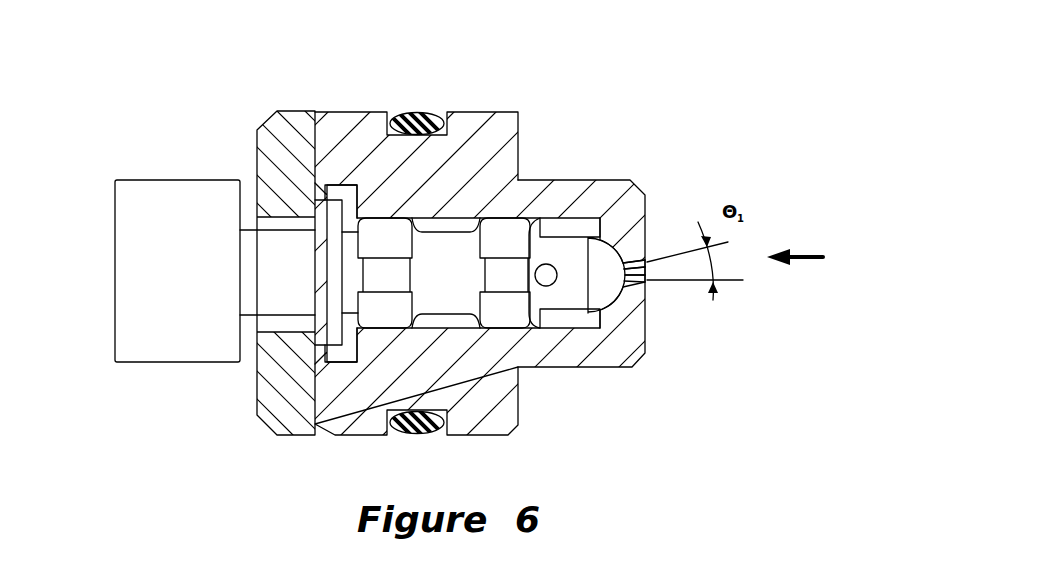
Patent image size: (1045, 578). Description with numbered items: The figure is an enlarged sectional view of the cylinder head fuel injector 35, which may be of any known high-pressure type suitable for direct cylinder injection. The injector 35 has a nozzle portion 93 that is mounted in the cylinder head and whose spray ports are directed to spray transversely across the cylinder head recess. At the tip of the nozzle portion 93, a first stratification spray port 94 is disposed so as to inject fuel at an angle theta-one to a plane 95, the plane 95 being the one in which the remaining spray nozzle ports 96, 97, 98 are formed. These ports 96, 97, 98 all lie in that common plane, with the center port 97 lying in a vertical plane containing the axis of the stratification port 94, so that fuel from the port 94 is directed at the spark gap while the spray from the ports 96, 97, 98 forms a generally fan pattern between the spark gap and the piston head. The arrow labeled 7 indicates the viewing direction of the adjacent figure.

The cylinder head fuel injector 35 is at (562, 126).
The nozzle portion 93 is at (600, 180).
The first stratification spray port 94 is at (647, 237).
The plane 95 is at (742, 282).
The spray nozzle port 96 is at (650, 283).
The center port 97 is at (729, 315).
The spray nozzle port 98 is at (729, 319).
The view direction arrow for FIG. 7 is at (815, 253).